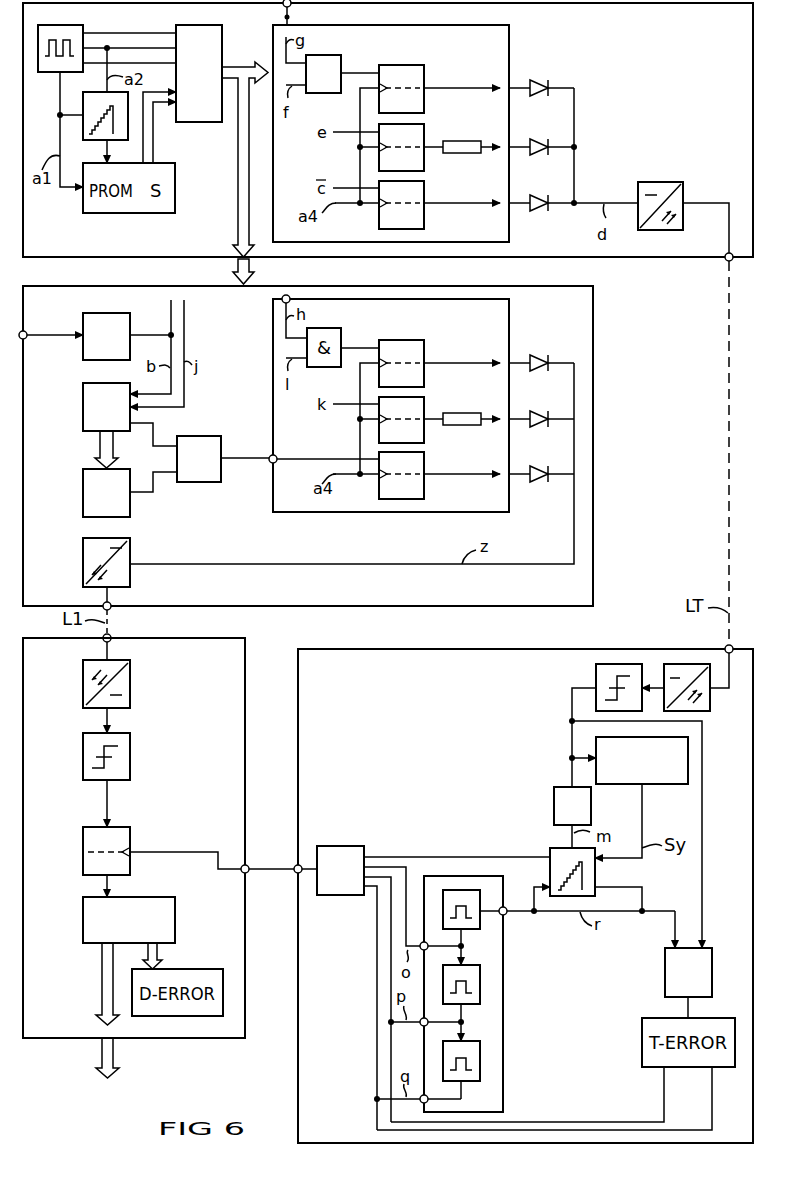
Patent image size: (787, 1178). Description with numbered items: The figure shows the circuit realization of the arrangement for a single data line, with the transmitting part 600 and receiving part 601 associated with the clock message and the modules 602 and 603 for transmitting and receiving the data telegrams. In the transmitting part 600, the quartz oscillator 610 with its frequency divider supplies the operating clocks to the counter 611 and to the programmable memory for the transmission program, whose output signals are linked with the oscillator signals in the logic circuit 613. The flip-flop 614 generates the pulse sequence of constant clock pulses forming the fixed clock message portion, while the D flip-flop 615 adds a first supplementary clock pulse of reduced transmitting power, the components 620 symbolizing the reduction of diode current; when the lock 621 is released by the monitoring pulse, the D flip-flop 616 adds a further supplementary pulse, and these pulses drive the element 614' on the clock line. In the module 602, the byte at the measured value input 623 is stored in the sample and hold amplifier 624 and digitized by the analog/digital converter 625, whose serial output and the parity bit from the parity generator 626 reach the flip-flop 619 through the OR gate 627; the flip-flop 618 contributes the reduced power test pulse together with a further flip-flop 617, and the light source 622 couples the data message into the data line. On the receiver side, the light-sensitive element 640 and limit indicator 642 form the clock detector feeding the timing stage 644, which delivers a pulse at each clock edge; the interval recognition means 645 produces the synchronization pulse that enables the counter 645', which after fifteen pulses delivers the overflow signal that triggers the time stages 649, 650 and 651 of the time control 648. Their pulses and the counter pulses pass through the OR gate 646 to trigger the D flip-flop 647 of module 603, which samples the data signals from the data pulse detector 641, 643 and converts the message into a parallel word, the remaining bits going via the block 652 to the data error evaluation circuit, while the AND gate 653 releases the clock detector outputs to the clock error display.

The transmitting part 600 is at (660, 258).
The receiving part 601 is at (533, 642).
The transmitting module 602 is at (593, 527).
The receiving module 603 is at (228, 638).
The quartz oscillator 610 is at (80, 25).
The counter 611 is at (83, 129).
The logic circuit 613 is at (222, 42).
The flip-flop 614 is at (423, 208).
The optocoupler 614' is at (660, 189).
The D flip-flop 615 is at (424, 128).
The D flip-flop 616 is at (424, 70).
The monostable stage 617 is at (424, 345).
The D flip-flop 618 is at (424, 402).
The flip-flop 619 is at (424, 490).
The current reducing components 620 is at (462, 154).
The lock 621 is at (328, 56).
The light source 622 is at (83, 552).
The measured value input 623 is at (26, 338).
The sample and hold amplifier 624 is at (95, 313).
The analog/digital converter 625 is at (83, 410).
The parity generator 626 is at (83, 486).
The OR gate 627 is at (190, 482).
The light-sensitive element 640 is at (710, 705).
The data pulse detector 641 is at (131, 683).
The limit indicator 642 is at (596, 678).
The data pulse detector 643 is at (131, 756).
The timing stage 644 is at (554, 800).
The interval recognition means 645 is at (642, 778).
The counter 645' is at (550, 861).
The OR gate 646 is at (346, 846).
The D flip-flop 647 is at (131, 838).
The time control 648 is at (503, 1093).
The time stage 649 is at (480, 918).
The time stage 650 is at (480, 983).
The time stage 651 is at (480, 1057).
The comparator 652 is at (155, 897).
The AND gate 653 is at (665, 976).